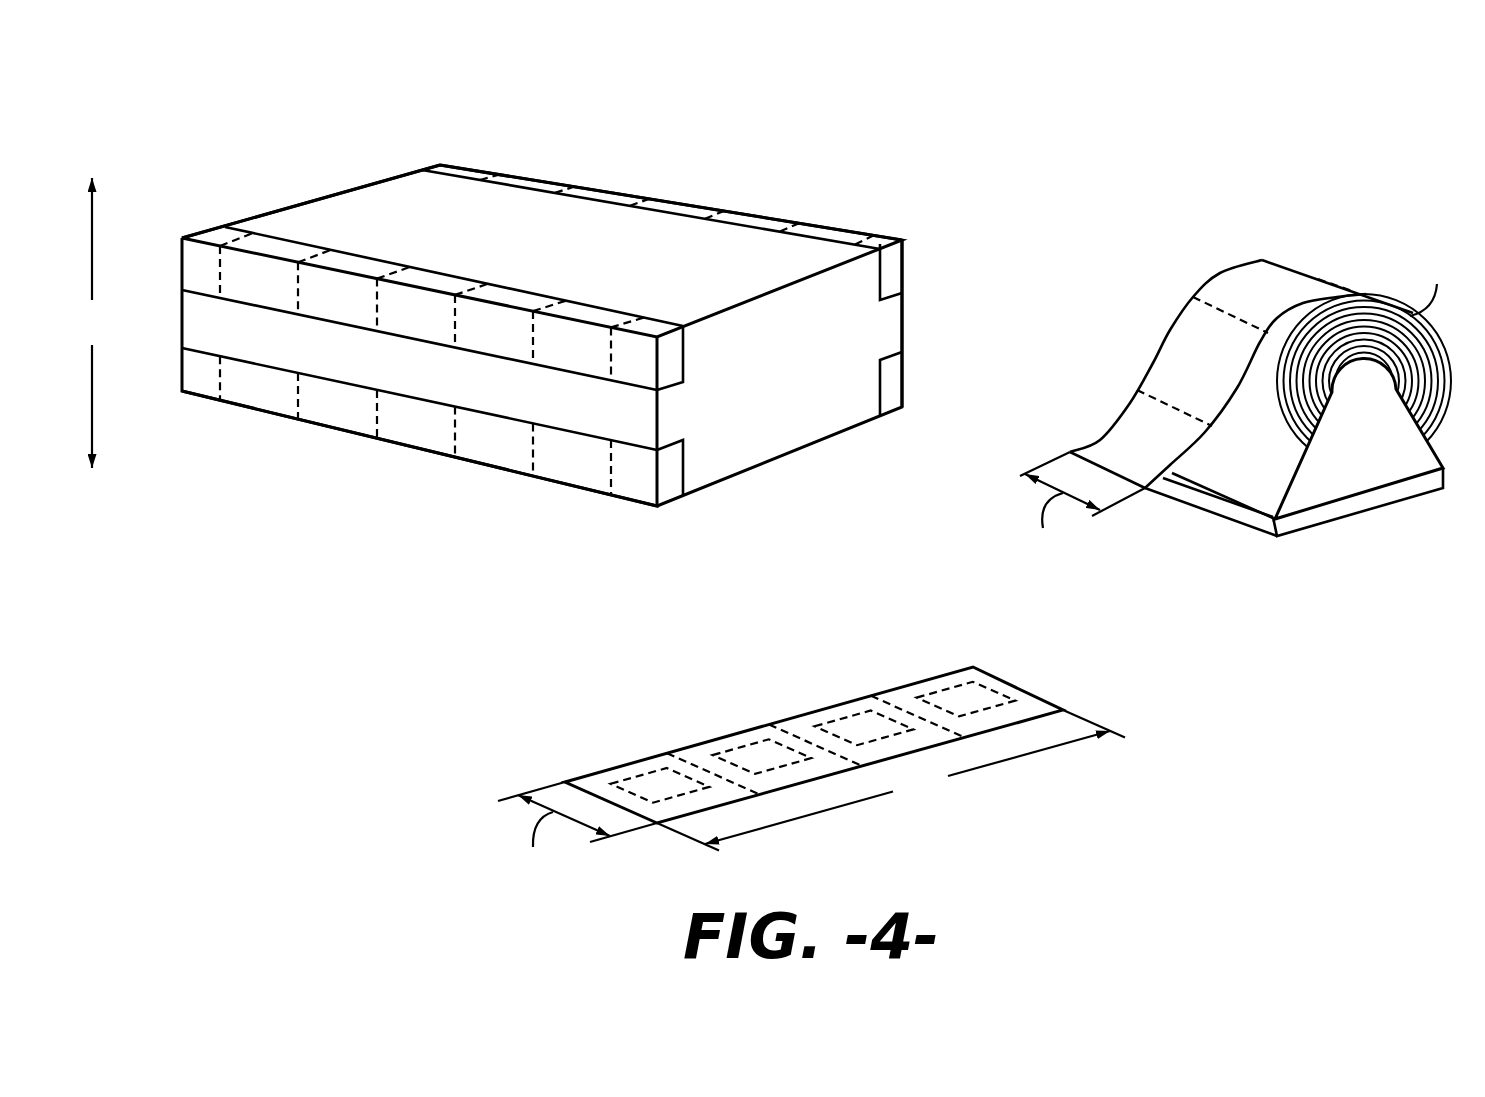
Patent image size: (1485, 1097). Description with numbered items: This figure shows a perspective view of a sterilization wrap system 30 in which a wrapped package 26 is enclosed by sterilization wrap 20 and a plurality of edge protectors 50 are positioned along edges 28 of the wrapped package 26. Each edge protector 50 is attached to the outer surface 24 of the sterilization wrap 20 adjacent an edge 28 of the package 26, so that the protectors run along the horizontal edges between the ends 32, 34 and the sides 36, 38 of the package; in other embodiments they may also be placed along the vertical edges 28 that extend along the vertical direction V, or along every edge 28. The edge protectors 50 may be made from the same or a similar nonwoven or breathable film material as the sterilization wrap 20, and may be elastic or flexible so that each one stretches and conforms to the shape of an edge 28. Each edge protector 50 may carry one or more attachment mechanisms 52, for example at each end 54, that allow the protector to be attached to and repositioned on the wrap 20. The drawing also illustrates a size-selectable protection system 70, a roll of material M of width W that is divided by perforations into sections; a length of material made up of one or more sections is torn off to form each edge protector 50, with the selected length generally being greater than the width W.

The sterilization wrap 20 is at (438, 195).
The outer surface 24 is at (554, 222).
The wrapped package 26 is at (793, 413).
The edge 28 is at (807, 277).
The sterilization wrap system 30 is at (254, 157).
The end 32 is at (978, 310).
The end 34 is at (343, 175).
The side 36 is at (195, 415).
The side 38 is at (678, 163).
The edge protector 50 is at (870, 632).
The attachment mechanism 52 is at (660, 783).
The end 54 is at (963, 656).
The size-selectable protection system 70 is at (1340, 240).